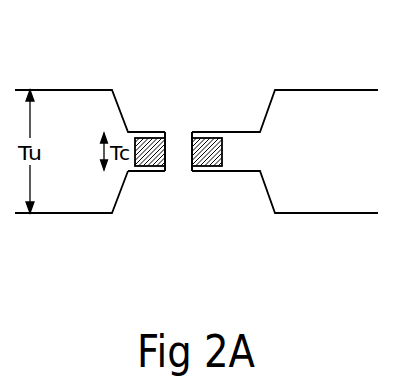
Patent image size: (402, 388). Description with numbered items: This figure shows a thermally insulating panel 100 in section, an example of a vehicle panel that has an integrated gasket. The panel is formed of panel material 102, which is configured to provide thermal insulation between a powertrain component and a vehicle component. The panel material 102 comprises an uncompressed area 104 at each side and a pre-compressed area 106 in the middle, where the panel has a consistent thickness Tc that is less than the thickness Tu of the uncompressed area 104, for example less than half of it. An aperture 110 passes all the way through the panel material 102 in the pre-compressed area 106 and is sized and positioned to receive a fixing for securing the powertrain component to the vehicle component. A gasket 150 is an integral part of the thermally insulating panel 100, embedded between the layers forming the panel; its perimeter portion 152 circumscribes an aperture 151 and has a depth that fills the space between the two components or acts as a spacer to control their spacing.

The thermally insulating panel 100 is at (68, 90).
The panel material 102 is at (53, 164).
The uncompressed area 104 is at (70, 213).
The pre-compressed area 106 is at (156, 172).
The aperture 110 is at (180, 163).
The gasket 150 is at (207, 142).
The aperture 151 is at (180, 140).
The perimeter portion 152 is at (150, 143).